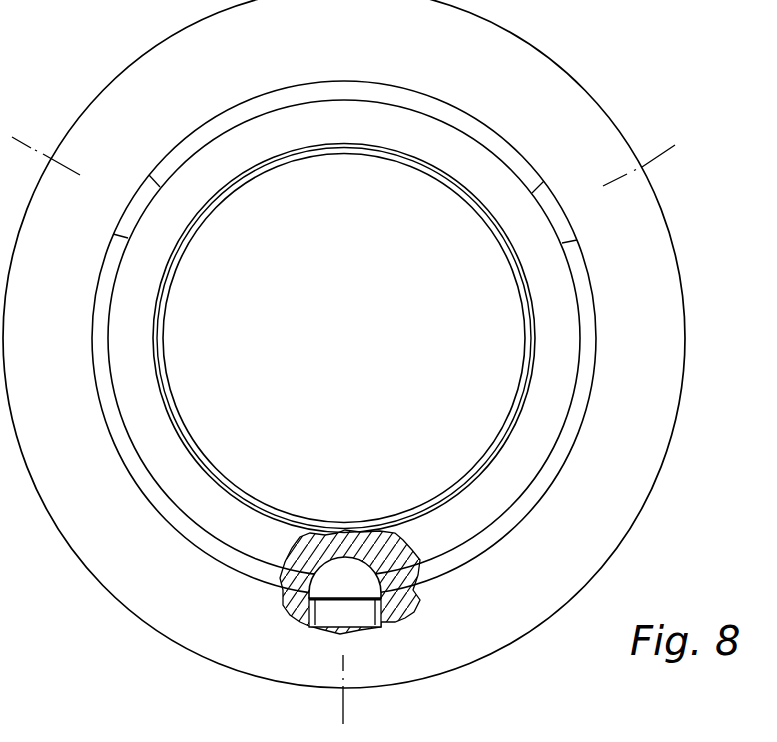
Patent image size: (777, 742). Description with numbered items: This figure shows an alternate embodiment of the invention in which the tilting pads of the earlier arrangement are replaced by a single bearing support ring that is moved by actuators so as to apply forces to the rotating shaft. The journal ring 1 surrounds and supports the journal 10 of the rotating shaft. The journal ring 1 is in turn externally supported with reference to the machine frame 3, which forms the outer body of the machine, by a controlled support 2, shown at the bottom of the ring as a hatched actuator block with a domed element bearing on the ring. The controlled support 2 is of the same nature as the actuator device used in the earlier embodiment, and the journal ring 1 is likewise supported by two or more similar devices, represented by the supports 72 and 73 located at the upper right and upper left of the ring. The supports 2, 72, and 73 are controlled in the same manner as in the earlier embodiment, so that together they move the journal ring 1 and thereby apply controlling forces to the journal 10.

The journal ring 1 is at (471, 522).
The controlled support 2 is at (350, 590).
The machine frame 3 is at (524, 592).
The journal 10 is at (441, 364).
The controlled support device 72 is at (543, 190).
The controlled support device 73 is at (122, 221).